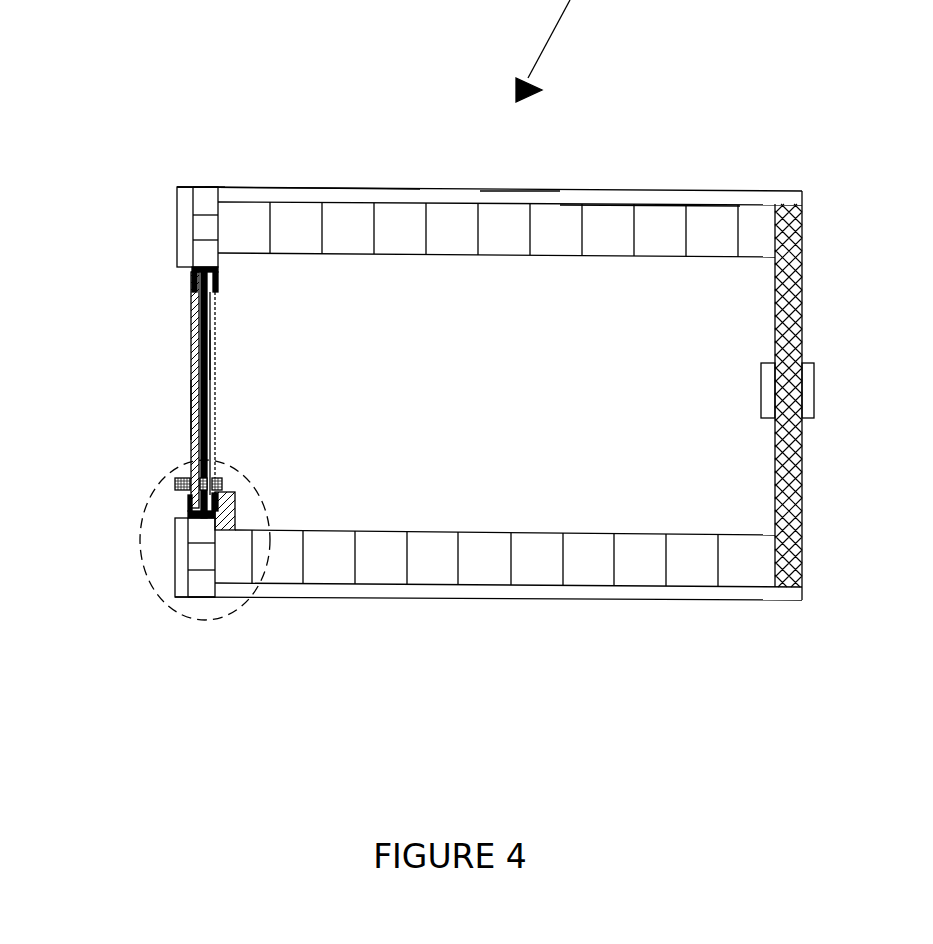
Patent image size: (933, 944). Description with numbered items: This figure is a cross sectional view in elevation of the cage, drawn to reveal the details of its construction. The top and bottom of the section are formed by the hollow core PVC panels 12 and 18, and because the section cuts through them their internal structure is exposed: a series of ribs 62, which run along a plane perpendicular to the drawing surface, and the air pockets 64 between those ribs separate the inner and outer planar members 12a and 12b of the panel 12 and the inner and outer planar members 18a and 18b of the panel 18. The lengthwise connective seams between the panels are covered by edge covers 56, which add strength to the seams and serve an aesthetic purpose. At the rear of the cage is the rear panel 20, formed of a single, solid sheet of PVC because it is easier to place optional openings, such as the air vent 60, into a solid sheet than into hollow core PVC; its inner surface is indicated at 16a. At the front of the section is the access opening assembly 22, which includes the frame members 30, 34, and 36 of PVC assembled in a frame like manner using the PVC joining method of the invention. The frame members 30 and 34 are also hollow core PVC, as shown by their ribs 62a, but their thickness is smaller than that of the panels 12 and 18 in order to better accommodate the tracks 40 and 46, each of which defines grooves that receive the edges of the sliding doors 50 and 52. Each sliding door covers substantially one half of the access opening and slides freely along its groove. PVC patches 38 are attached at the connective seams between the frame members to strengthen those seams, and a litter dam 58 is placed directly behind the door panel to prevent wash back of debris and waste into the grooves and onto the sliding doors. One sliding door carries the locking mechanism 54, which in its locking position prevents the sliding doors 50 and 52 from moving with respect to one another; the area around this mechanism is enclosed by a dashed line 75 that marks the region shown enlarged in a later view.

The panel 12 is at (568, 261).
The inner planar member 12a is at (600, 253).
The outer planar member 12b is at (540, 204).
The end wall inner surface 16a is at (668, 340).
The panel 18 is at (745, 533).
The inner planar member 18a is at (620, 535).
The outer planar member 18b is at (513, 587).
The rear panel 20 is at (805, 225).
The access opening assembly 22 is at (214, 184).
The frame member 30 is at (200, 186).
The frame member 34 is at (197, 597).
The frame member 36 is at (190, 350).
The patch 38 is at (185, 187).
The track 40 is at (218, 270).
The track 46 is at (207, 325).
The sliding door 50 is at (190, 408).
The sliding door 52 is at (214, 352).
The locking mechanism 54 is at (180, 482).
The edge cover 56 is at (372, 188).
The litter dam 58 is at (222, 508).
The air vent 60 is at (815, 372).
The rib 62 is at (207, 227).
The rib 62a is at (198, 598).
The air pocket 64 is at (338, 235).
The dashed line 75 is at (142, 563).